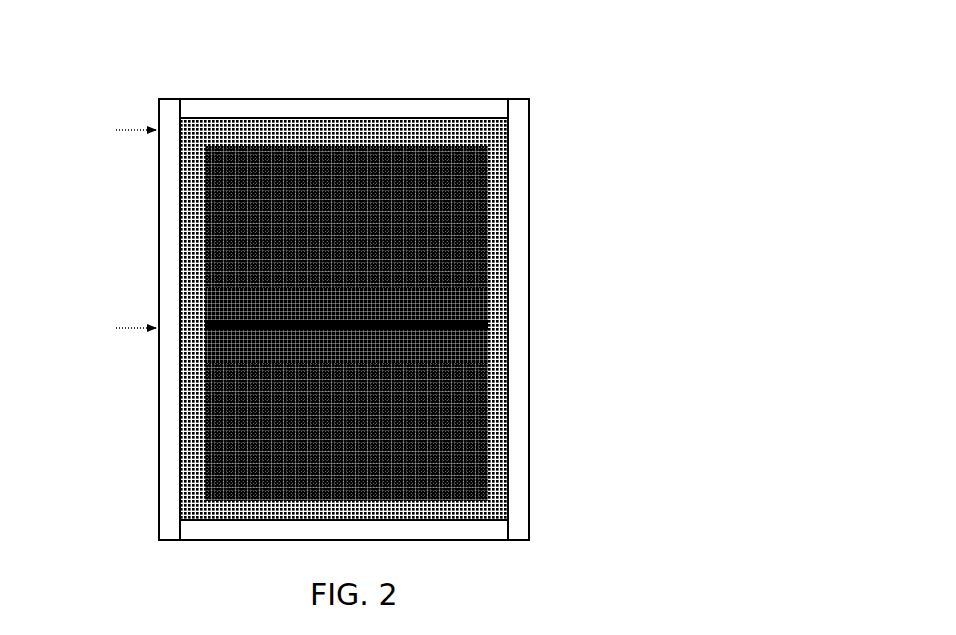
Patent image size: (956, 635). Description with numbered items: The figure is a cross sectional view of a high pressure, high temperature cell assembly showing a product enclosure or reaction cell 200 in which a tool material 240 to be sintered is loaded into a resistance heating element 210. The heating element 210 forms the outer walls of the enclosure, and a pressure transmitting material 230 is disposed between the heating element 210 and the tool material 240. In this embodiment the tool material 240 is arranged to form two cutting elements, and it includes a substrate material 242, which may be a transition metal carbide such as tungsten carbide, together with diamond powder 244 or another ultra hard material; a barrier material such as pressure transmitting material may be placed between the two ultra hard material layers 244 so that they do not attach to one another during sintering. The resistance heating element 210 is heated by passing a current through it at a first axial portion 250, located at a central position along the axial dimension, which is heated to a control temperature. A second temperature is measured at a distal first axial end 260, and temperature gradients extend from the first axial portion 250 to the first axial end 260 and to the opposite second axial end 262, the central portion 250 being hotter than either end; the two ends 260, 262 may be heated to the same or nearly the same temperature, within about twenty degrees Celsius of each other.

The product enclosure 200 is at (432, 50).
The resistance heating element 210 is at (507, 236).
The pressure transmitting material 230 is at (484, 406).
The tool material 240 is at (340, 323).
The substrate material 242 is at (228, 215).
The diamond powder 244 is at (213, 296).
The first axial portion 250 is at (524, 316).
The first axial end 260 is at (524, 120).
The second axial end 262 is at (524, 513).